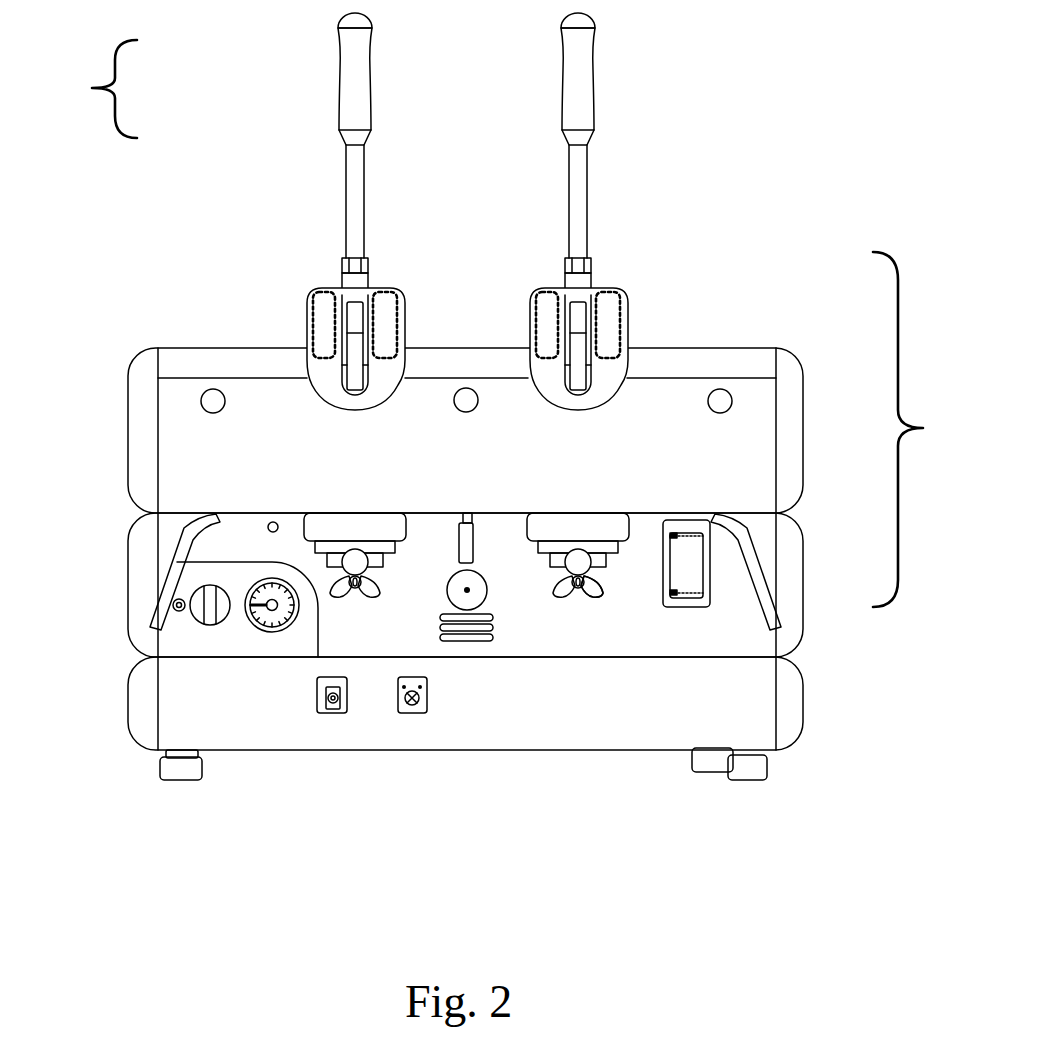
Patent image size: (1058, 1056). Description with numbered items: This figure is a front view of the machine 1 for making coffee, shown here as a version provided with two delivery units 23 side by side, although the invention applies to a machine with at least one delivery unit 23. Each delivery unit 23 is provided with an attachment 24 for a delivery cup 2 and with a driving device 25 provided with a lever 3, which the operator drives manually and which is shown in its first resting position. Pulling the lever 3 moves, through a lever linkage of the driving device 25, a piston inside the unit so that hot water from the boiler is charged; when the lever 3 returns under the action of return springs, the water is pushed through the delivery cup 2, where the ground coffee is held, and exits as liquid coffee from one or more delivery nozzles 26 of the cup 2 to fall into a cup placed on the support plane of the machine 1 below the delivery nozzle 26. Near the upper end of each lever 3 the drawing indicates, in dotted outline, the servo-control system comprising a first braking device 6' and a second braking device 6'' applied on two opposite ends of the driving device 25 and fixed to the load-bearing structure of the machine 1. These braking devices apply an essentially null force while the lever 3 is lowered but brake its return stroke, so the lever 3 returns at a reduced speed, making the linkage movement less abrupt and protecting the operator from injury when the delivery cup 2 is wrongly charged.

The machine for making coffee 1 is at (148, 352).
The delivery cup 2 is at (378, 563).
The lever 3 is at (362, 173).
The first braking device 6' is at (402, 303).
The second braking device 6'' is at (513, 296).
The delivery unit 23 is at (502, 323).
The attachment 24 is at (322, 513).
The driving device 25 is at (328, 283).
The delivery nozzle 26 is at (593, 593).